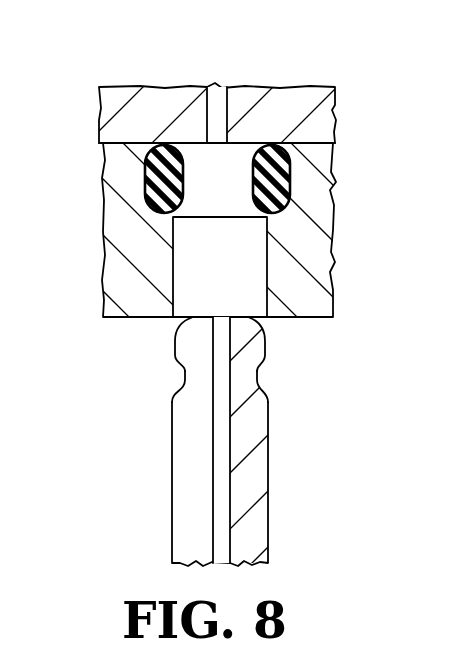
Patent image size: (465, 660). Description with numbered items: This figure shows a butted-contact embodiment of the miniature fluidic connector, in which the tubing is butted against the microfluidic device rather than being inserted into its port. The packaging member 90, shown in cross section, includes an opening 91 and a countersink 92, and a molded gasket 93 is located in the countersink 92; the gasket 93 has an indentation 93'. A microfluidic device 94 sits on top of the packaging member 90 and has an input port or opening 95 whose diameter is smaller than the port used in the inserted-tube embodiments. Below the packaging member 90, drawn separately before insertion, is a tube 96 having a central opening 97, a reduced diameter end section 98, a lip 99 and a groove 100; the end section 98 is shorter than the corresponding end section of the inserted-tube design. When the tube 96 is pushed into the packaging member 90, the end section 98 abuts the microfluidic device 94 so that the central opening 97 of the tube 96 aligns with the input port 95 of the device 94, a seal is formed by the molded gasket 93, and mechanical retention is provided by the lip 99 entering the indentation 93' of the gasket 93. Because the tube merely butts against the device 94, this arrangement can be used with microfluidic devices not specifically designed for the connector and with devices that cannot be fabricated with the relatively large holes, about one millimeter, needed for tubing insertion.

The packaging member 90 is at (333, 268).
The opening 91 is at (173, 257).
The countersink 92 is at (290, 179).
The molded gasket 93 is at (151, 196).
The indentation 93' is at (219, 176).
The microfluidic device 94 is at (335, 115).
The input port 95 is at (221, 96).
The tube 96 is at (268, 483).
The central opening 97 is at (220, 475).
The reduced diameter end section 98 is at (177, 331).
The lip 99 is at (265, 352).
The groove 100 is at (177, 380).